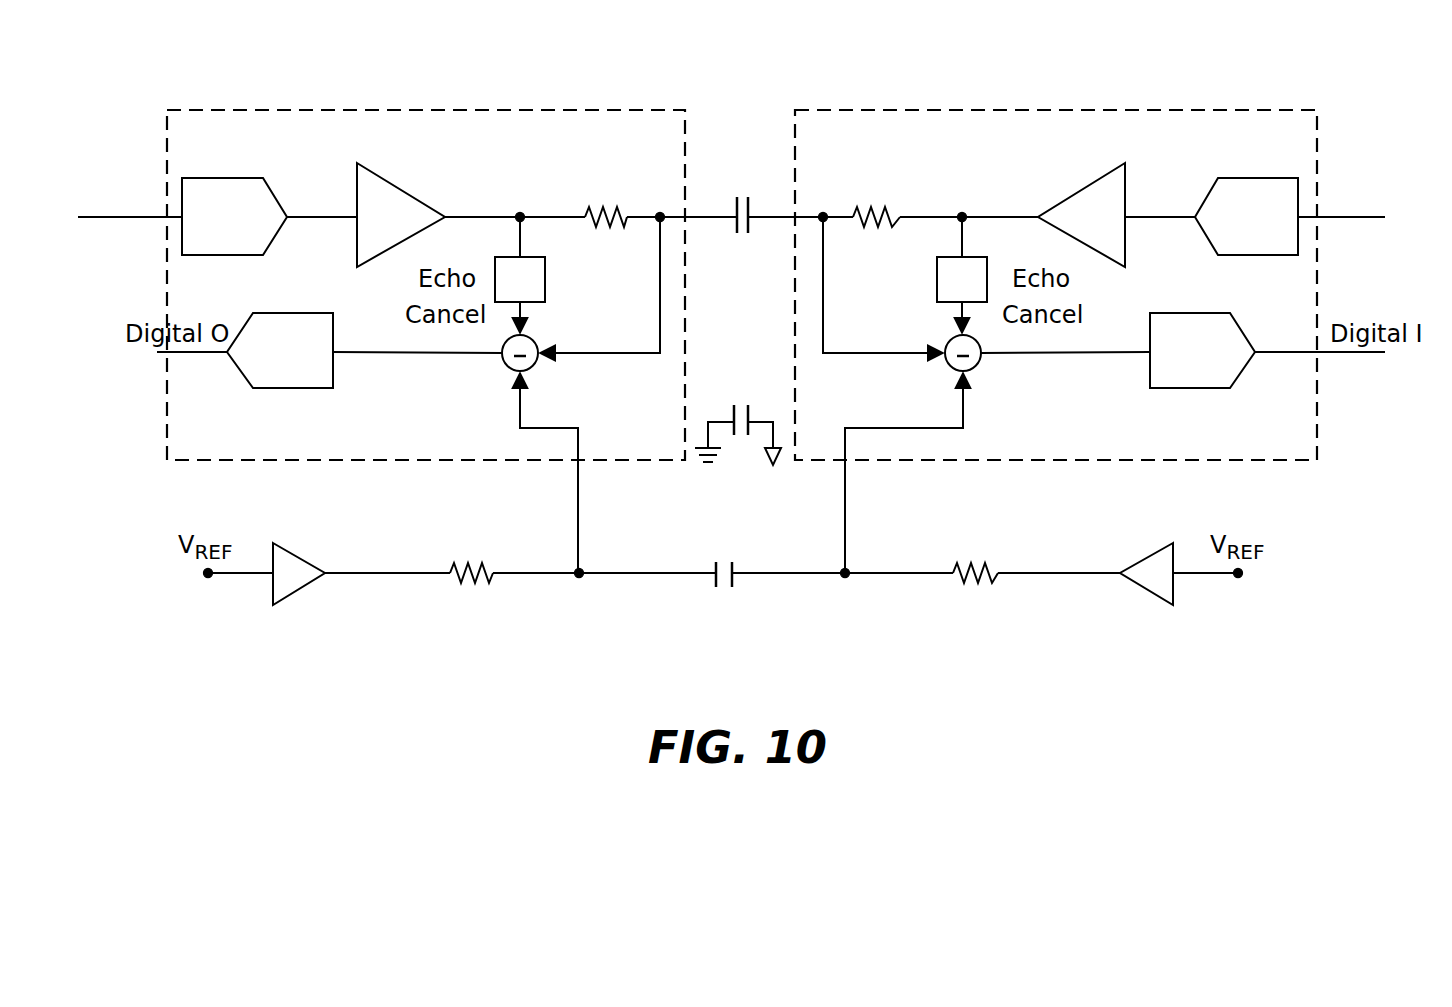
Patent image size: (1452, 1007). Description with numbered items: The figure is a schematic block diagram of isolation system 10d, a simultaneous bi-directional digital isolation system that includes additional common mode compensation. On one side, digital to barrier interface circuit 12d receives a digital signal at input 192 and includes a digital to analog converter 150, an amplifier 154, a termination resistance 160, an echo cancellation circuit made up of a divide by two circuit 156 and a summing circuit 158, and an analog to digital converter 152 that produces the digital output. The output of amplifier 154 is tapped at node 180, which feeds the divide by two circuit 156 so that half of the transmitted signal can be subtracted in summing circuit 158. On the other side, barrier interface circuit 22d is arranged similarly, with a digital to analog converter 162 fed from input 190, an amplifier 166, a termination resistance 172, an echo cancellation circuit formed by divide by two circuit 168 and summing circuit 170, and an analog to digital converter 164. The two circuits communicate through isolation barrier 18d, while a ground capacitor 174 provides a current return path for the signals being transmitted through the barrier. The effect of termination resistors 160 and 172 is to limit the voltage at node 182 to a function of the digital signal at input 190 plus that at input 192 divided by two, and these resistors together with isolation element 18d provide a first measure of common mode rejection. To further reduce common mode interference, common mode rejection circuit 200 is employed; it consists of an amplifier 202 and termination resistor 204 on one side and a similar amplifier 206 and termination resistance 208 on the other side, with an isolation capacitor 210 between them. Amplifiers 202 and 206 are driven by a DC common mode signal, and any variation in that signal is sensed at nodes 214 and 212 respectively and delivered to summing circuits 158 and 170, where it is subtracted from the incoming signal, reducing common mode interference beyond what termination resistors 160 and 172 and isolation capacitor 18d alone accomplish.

The isolation system 10d is at (860, 57).
The digital to barrier interface circuit 12d is at (455, 110).
The barrier interface circuit 22d is at (1100, 110).
The isolation barrier 18d is at (740, 195).
The digital to analog converter 150 is at (222, 178).
The analog to digital converter 152 is at (272, 388).
The amplifier 154 is at (398, 188).
The divide by two circuit 156 is at (545, 300).
The summing circuit 158 is at (507, 366).
The termination resistance 160 is at (614, 228).
The digital to analog converter 162 is at (1265, 178).
The analog to digital converter 164 is at (1210, 388).
The amplifier 166 is at (1090, 190).
The divide by two circuit 168 is at (937, 288).
The summing circuit 170 is at (978, 366).
The termination resistance 172 is at (877, 228).
The ground capacitor 174 is at (742, 442).
The node at amplifier output 180 is at (519, 212).
The barrier voltage node 182 is at (765, 220).
The input 190 is at (1330, 220).
The input 192 is at (152, 220).
The common mode rejection circuit 200 is at (1062, 525).
The amplifier 202 is at (292, 553).
The termination resistor 204 is at (470, 590).
The amplifier 206 is at (1158, 600).
The termination resistance 208 is at (975, 590).
The isolation capacitor 210 is at (724, 590).
The sensing node 212 is at (843, 578).
The node 214 is at (579, 578).